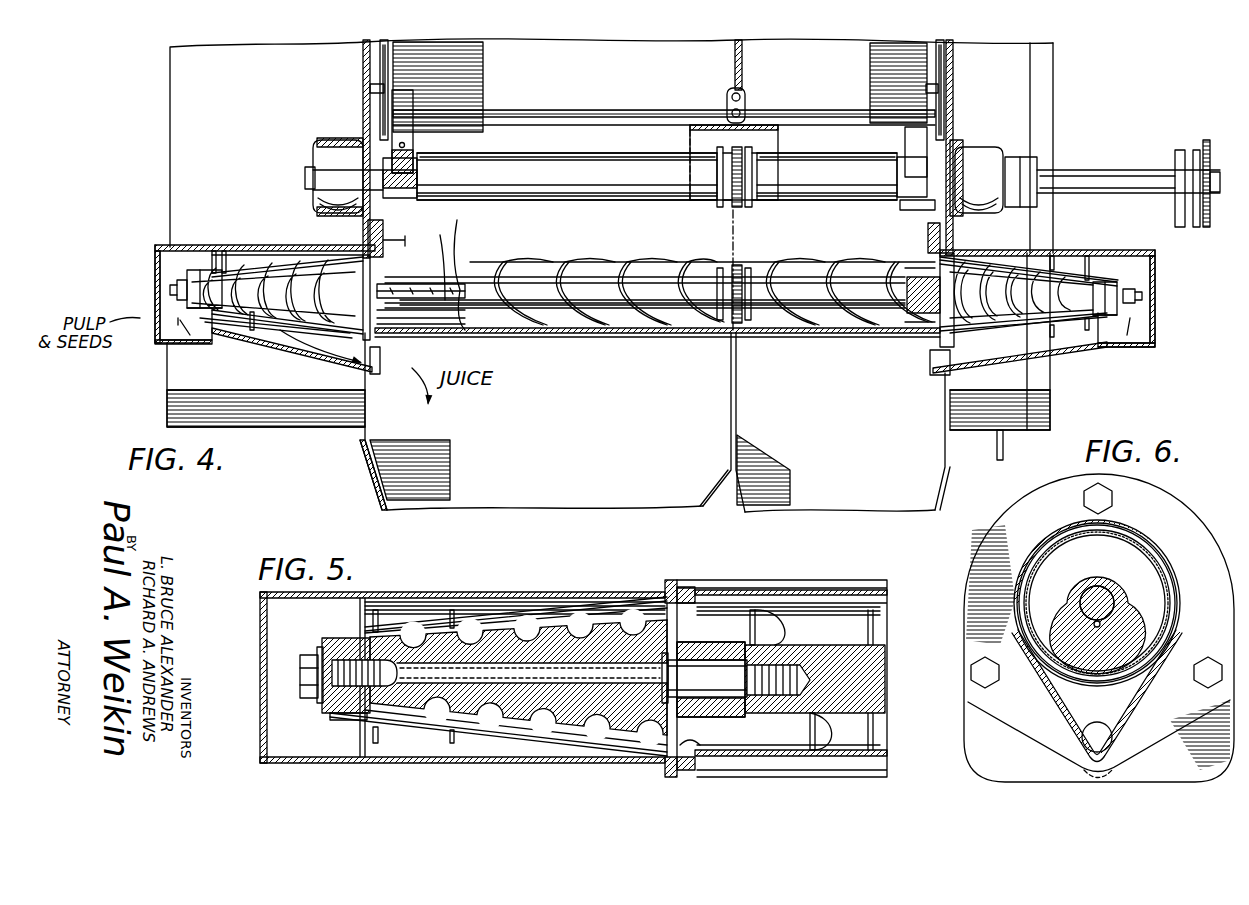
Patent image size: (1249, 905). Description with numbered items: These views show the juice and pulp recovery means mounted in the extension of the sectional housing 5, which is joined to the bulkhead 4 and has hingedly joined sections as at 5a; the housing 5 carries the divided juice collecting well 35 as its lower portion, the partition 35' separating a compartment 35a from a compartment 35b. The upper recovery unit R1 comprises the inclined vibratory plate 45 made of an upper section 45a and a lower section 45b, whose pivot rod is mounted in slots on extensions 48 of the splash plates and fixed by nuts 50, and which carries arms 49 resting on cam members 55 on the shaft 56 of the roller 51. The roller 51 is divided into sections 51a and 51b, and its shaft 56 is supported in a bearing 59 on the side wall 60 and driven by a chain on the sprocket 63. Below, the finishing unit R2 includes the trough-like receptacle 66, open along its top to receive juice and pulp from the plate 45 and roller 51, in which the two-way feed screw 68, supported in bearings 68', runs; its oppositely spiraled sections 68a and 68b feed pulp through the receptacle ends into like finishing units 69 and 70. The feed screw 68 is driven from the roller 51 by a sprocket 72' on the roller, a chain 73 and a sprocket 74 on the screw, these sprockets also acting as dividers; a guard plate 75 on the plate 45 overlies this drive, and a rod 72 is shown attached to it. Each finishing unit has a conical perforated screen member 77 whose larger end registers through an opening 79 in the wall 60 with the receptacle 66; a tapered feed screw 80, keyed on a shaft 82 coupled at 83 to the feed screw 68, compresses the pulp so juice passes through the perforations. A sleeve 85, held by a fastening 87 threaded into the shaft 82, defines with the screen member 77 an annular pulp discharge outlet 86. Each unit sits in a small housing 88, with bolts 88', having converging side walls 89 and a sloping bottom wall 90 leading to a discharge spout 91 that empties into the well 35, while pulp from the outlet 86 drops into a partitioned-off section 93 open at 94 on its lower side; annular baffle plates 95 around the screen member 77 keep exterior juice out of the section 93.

In FIG. 4, the bulkhead 4 is at (1043, 113).
In FIG. 4, the sectional housing 5 is at (183, 95).
In FIG. 4, the hinge joint 5a is at (468, 305).
In FIG. 4, the divided juice collecting well 35 is at (625, 426).
In FIG. 4, the partition 35' is at (706, 422).
In FIG. 4, the compartment 35a is at (468, 455).
In FIG. 4, the compartment 35b is at (792, 467).
In FIG. 4, the vibratory tray or plate 45 is at (620, 45).
In FIG. 4, the upper section 45a is at (660, 87).
In FIG. 4, the lower section 45b is at (505, 117).
In FIG. 4, the extensions 48 is at (378, 64).
In FIG. 4, the arms 49 is at (400, 128).
In FIG. 4, the nuts 50 is at (370, 90).
In FIG. 4, the roller 51 is at (618, 198).
In FIG. 4, the roller section 51a is at (465, 198).
In FIG. 4, the roller section 51b is at (873, 198).
In FIG. 4, the cam members 55 is at (415, 200).
In FIG. 4, the shaft 56 is at (318, 176).
In FIG. 5, the shaft 56 is at (760, 575).
In FIG. 4, the bearing 59 is at (332, 163).
In FIG. 4, the side wall 60 is at (363, 112).
In FIG. 5, the side wall 60 is at (680, 580).
In FIG. 6, the side wall 60 is at (990, 555).
In FIG. 4, the sprocket 63 is at (1207, 145).
In FIG. 4, the trough-like receptacle 66 is at (580, 338).
In FIG. 5, the trough-like receptacle 66 is at (838, 612).
In FIG. 4, the two-way feed screw 68 is at (662, 292).
In FIG. 5, the two-way feed screw 68 is at (837, 677).
In FIG. 6, the two-way feed screw 68 is at (930, 661).
In FIG. 5, the bearings 68' is at (711, 693).
In FIG. 4, the feed screw section 68a is at (548, 247).
In FIG. 5, the feed screw section 68a is at (818, 745).
In FIG. 4, the feed screw section 68b is at (785, 265).
In FIG. 4, the finishing unit 69 is at (233, 256).
In FIG. 5, the finishing unit 69 is at (518, 608).
In FIG. 6, the finishing unit 69 is at (1205, 592).
In FIG. 4, the finishing unit 70 is at (1040, 250).
In FIG. 4, the rod 72 is at (757, 81).
In FIG. 4, the sprocket 72' is at (758, 186).
In FIG. 4, the chain 73 is at (737, 238).
In FIG. 4, the sprocket 74 is at (728, 312).
In FIG. 4, the guard plate 75 is at (765, 125).
In FIG. 4, the conical perforated screen member 77 is at (282, 258).
In FIG. 5, the conical perforated screen member 77 is at (583, 610).
In FIG. 6, the conical perforated screen member 77 is at (1165, 570).
In FIG. 4, the opening 79 is at (935, 338).
In FIG. 5, the opening 79 is at (690, 752).
In FIG. 4, the tapered feed screw 80 is at (280, 318).
In FIG. 5, the tapered feed screw 80 is at (467, 712).
In FIG. 6, the tapered feed screw 80 is at (1140, 635).
In FIG. 5, the shaft 82 is at (613, 660).
In FIG. 6, the shaft 82 is at (1097, 590).
In FIG. 5, the coupling 83 is at (775, 698).
In FIG. 4, the sleeve 85 is at (190, 280).
In FIG. 5, the sleeve 85 is at (335, 652).
In FIG. 4, the annular pulp discharge outlet 86 is at (188, 310).
In FIG. 5, the annular pulp discharge outlet 86 is at (350, 712).
In FIG. 4, the fastening 87 is at (172, 292).
In FIG. 5, the fastening 87 is at (307, 693).
In FIG. 4, the housing 88 is at (675, 227).
In FIG. 5, the housing 88 is at (462, 654).
In FIG. 6, the housing 88 is at (1077, 693).
In FIG. 6, the bolt 88' is at (1071, 596).
In FIG. 4, the converging side walls 89 is at (248, 328).
In FIG. 6, the converging side walls 89 is at (1060, 706).
In FIG. 4, the bottom wall 90 is at (282, 350).
In FIG. 6, the bottom wall 90 is at (1085, 760).
In FIG. 4, the discharge spout 91 is at (382, 354).
In FIG. 6, the discharge spout 91 is at (1118, 745).
In FIG. 4, the partitioned-off section 93 is at (163, 263).
In FIG. 5, the partitioned-off section 93 is at (258, 635).
In FIG. 4, the opening 94 is at (140, 340).
In FIG. 4, the annular baffle plates 95 is at (240, 332).
In FIG. 5, the annular baffle plates 95 is at (450, 745).
In FIG. 4, the juice and pulp recovery unit R1 is at (615, 143).
In FIG. 4, the pulp and juice recovery unit R2 is at (656, 342).